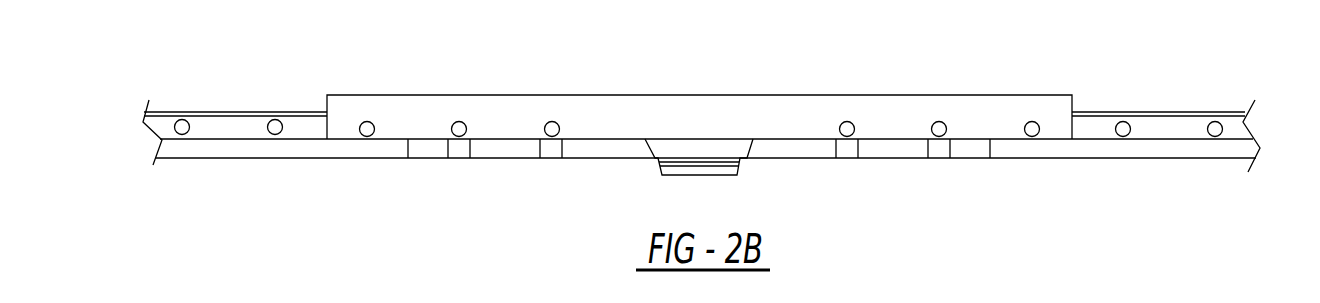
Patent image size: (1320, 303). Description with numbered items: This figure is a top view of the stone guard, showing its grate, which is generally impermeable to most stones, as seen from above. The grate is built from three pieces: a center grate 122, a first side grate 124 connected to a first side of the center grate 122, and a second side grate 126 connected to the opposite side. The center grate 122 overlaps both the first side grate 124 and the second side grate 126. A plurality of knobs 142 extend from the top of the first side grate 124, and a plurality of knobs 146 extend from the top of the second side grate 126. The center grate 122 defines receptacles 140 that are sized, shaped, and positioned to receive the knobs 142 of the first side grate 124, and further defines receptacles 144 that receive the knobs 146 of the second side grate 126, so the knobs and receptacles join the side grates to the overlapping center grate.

The center grate 122 is at (673, 95).
The first side grate 124 is at (225, 110).
The second side grate 126 is at (1185, 110).
The receptacles 140 is at (459, 129).
The knobs 142 is at (275, 127).
The receptacles 144 is at (939, 129).
The knobs 146 is at (939, 129).